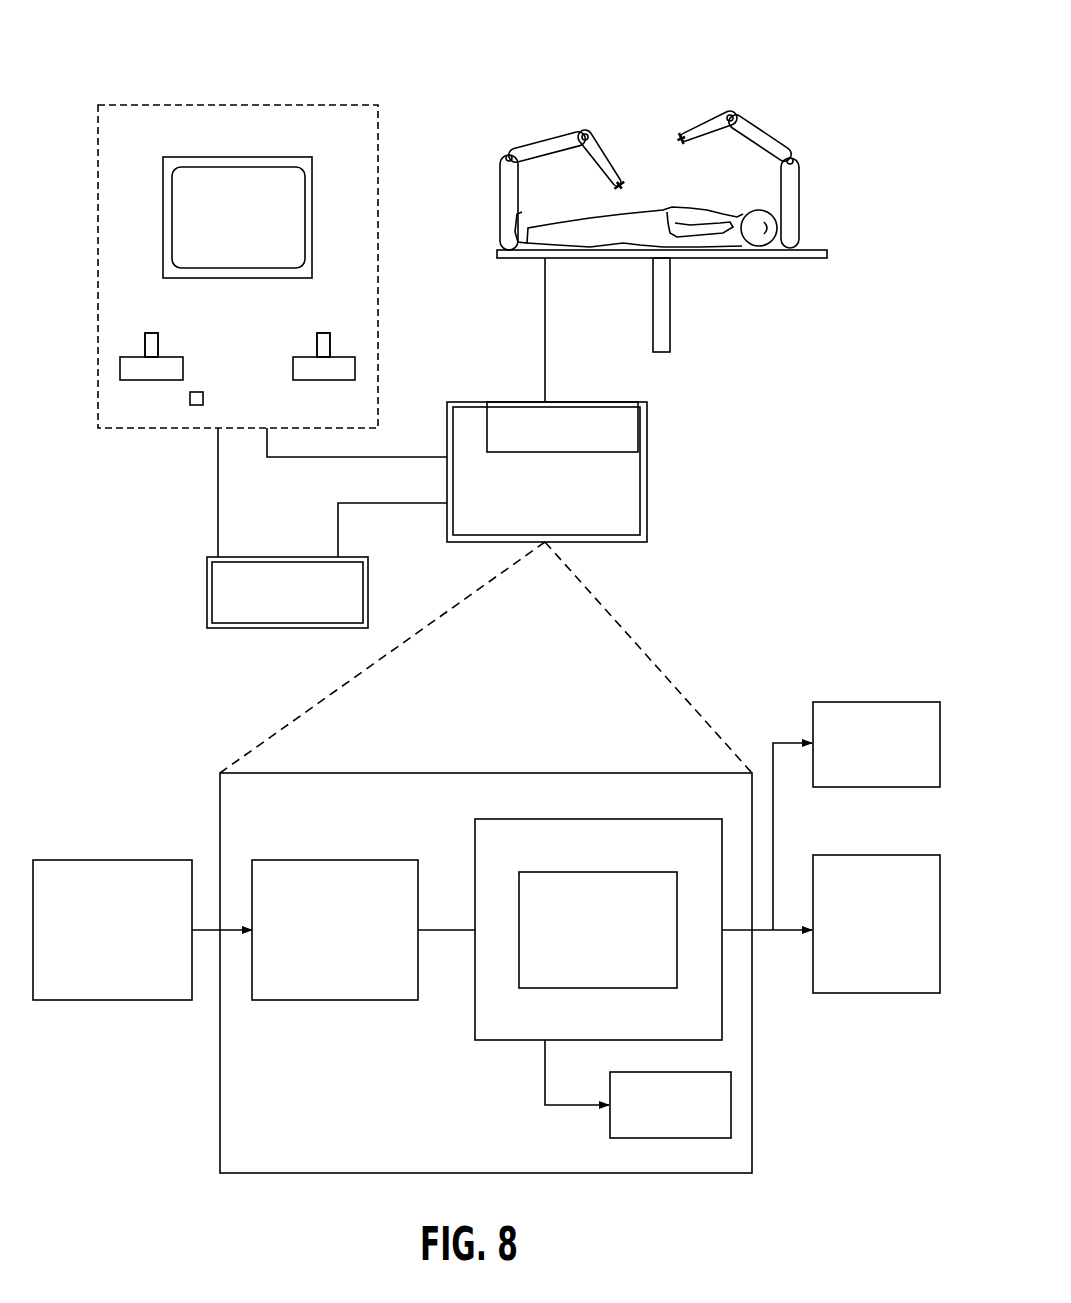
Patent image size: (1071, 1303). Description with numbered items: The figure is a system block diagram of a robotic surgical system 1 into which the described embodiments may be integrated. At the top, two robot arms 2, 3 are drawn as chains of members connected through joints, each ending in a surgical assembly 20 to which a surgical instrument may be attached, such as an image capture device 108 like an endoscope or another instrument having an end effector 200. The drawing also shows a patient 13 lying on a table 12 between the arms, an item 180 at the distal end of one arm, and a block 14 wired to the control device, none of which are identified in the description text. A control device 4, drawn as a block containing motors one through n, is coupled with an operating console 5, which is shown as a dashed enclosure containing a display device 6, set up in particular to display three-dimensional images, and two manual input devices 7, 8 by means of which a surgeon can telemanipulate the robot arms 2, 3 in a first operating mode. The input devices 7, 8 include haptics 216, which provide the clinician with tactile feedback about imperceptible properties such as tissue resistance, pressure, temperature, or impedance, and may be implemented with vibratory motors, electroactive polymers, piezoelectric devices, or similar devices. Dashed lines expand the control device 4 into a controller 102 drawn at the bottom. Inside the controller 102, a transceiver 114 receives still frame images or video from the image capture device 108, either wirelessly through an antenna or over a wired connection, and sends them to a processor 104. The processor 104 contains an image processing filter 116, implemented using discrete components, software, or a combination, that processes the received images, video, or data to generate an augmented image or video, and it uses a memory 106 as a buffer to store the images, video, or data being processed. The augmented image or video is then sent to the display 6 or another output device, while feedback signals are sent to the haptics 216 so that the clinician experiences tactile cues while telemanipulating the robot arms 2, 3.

The robotic surgical system 1 is at (772, 480).
The robot arm 2 is at (525, 137).
The robot arm 3 is at (790, 137).
The control device 4 is at (543, 505).
The operating console 5 is at (138, 80).
The display device 6 is at (245, 230).
The manual input device 7 is at (140, 380).
The manual input device 8 is at (335, 380).
The surgical table 12 is at (535, 260).
The patient 13 is at (708, 250).
The database 14 is at (302, 605).
The surgical assembly 20 is at (619, 175).
The surgical instrument 180 is at (622, 183).
The end effector 200 is at (683, 133).
The controller 102 is at (610, 773).
The processor 104 is at (633, 819).
The memory 106 is at (731, 1092).
The image capture device 108 is at (115, 860).
The transceiver 114 is at (367, 860).
The image processing filter 116 is at (633, 872).
The haptics 216 is at (145, 340).